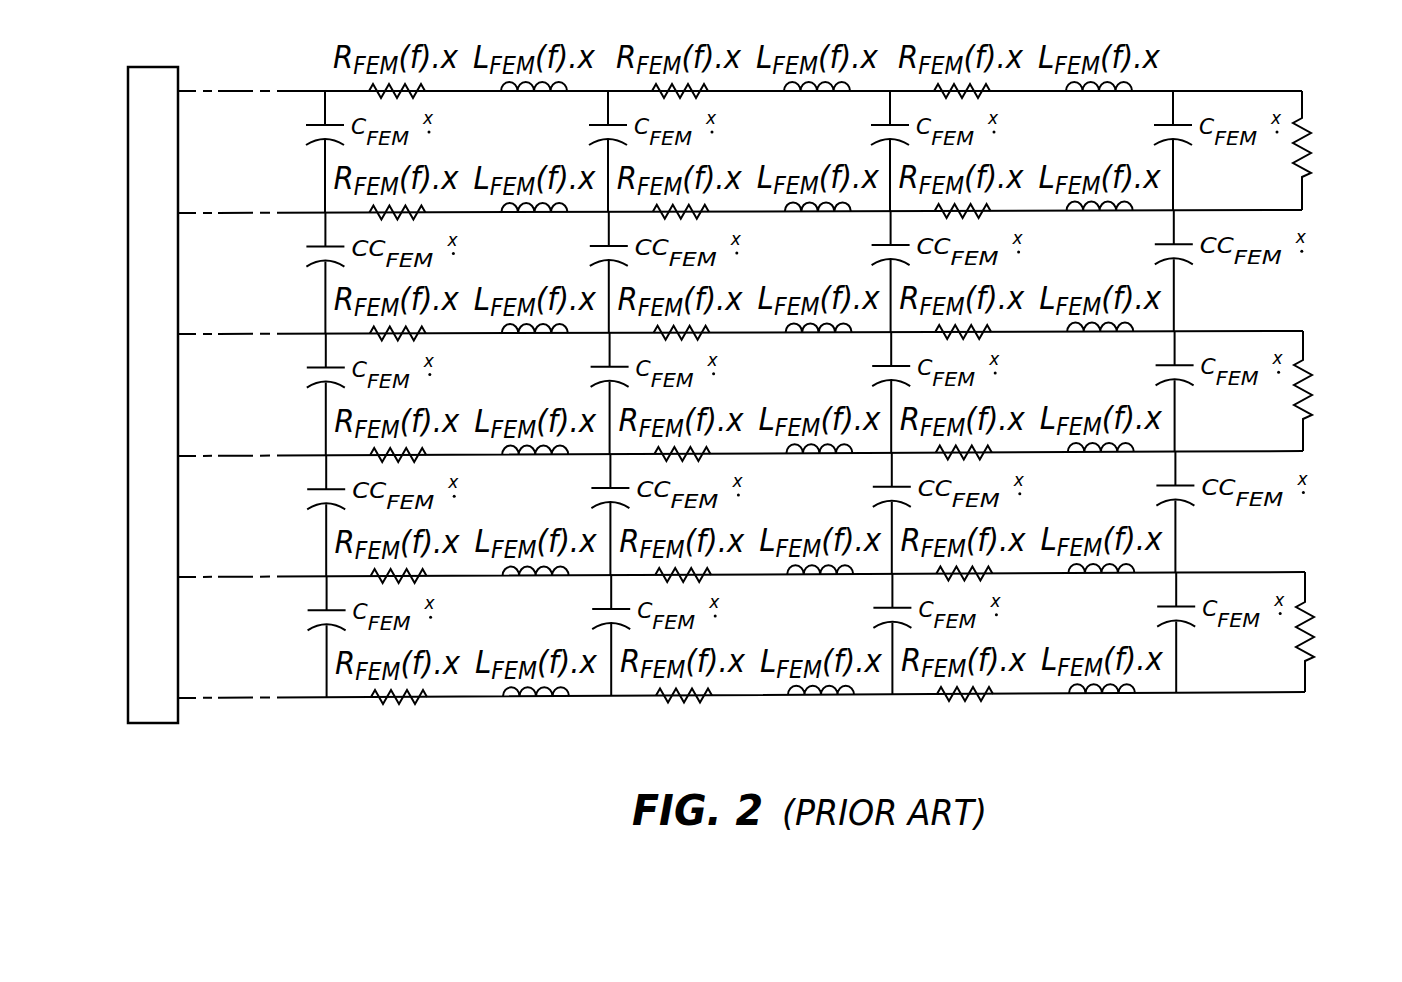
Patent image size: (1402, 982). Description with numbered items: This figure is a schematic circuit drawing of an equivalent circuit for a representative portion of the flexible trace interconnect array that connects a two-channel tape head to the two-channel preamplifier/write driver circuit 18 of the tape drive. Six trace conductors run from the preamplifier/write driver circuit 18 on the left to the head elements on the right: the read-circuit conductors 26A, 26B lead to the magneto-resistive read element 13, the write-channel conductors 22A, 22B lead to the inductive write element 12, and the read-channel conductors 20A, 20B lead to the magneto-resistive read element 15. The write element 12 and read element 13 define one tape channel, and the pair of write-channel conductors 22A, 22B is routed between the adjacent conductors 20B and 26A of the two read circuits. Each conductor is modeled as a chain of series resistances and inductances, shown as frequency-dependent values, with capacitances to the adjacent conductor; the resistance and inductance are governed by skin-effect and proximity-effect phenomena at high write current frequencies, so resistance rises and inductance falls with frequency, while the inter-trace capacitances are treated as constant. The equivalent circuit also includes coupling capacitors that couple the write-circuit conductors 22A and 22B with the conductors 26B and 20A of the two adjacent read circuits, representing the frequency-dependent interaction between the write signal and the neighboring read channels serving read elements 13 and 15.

The preamplifier/write driver circuit 18 is at (128, 668).
The read circuit conductor 26A is at (1278, 91).
The read circuit conductor 26B is at (1278, 210).
The magneto-resistive read element 13 is at (1311, 143).
The write-channel conductor 22A is at (1278, 331).
The write-channel conductor 22B is at (1278, 451).
The inductive write element 12 is at (1312, 384).
The read-channel conductor 20A is at (1278, 572).
The read-channel conductor 20B is at (1280, 692).
The magneto-resistive read element 15 is at (1314, 624).